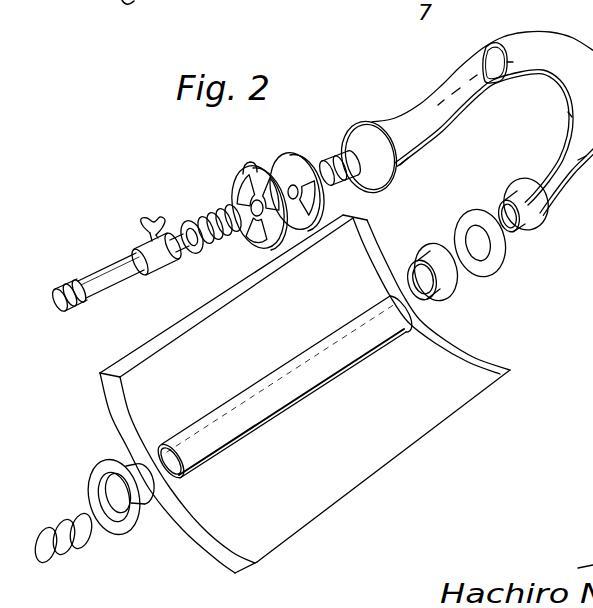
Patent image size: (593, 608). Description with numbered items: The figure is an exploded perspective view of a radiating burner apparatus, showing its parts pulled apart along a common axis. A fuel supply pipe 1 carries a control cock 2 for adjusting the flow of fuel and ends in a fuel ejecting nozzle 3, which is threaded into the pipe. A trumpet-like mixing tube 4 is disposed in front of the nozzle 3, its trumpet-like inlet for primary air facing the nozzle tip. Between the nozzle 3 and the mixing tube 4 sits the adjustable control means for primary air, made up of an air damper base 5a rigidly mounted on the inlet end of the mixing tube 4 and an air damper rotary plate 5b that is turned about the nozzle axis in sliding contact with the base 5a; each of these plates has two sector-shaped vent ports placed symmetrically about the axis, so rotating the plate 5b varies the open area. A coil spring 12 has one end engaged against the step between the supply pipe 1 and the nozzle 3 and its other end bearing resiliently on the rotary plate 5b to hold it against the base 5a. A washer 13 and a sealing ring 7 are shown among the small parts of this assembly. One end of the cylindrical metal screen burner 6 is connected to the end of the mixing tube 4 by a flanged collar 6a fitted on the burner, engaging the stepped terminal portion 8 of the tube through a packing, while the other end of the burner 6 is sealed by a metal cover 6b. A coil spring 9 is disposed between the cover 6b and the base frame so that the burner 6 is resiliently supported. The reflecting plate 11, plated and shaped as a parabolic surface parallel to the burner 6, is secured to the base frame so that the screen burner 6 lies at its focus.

The fuel supply pipe 1 is at (108, 272).
The control cock 2 is at (152, 217).
The fuel ejecting nozzle 3 is at (337, 155).
The trumpet-like mixing tube 4 is at (540, 45).
The air damper base 5a is at (285, 156).
The air damper rotary plate 5b is at (246, 163).
The cylindrical metal screen burner 6 is at (307, 391).
The flanged collar 6a is at (452, 288).
The metal cover 6b is at (123, 528).
The washer 7 is at (493, 267).
The stepped terminal portion 8 is at (528, 226).
The coil spring 9 is at (56, 560).
The reflecting plate 11 is at (406, 414).
The coil spring 12 is at (212, 206).
The washer 13 is at (186, 256).